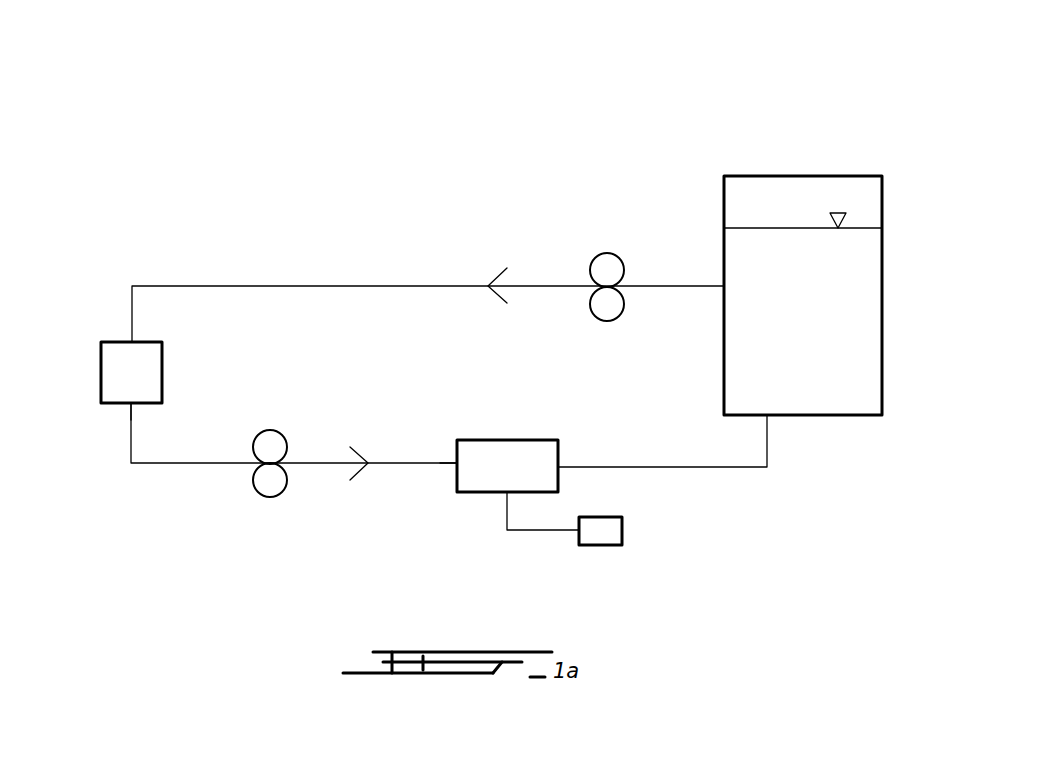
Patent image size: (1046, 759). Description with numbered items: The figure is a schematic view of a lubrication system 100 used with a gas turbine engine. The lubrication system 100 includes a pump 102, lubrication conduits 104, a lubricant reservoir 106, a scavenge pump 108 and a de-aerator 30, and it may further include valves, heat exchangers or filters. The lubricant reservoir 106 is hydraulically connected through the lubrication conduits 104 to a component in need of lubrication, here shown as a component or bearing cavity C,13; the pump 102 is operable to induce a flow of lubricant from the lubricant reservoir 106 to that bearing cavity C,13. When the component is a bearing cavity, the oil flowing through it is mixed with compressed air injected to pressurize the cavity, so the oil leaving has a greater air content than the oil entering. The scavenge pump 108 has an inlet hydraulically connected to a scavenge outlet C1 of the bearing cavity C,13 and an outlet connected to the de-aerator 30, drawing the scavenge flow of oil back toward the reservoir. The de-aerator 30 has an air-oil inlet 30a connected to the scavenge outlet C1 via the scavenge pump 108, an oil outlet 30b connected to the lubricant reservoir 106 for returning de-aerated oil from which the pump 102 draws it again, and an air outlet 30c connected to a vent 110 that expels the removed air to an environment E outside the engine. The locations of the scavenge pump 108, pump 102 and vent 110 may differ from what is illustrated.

The lubrication system 100 is at (868, 159).
The pump 102 is at (618, 244).
The lubrication conduits 104 is at (352, 284).
The lubricant reservoir 106 is at (821, 328).
The scavenge pump 108 is at (266, 508).
The vent 110 is at (622, 531).
The de-aerator 30 is at (520, 478).
The air-oil inlet 30a is at (453, 461).
The oil outlet 30b is at (563, 462).
The air outlet 30c is at (500, 498).
The component / bearing cavity C,13 is at (100, 372).
The scavenge outlet C1 is at (120, 407).
The environment E is at (833, 545).